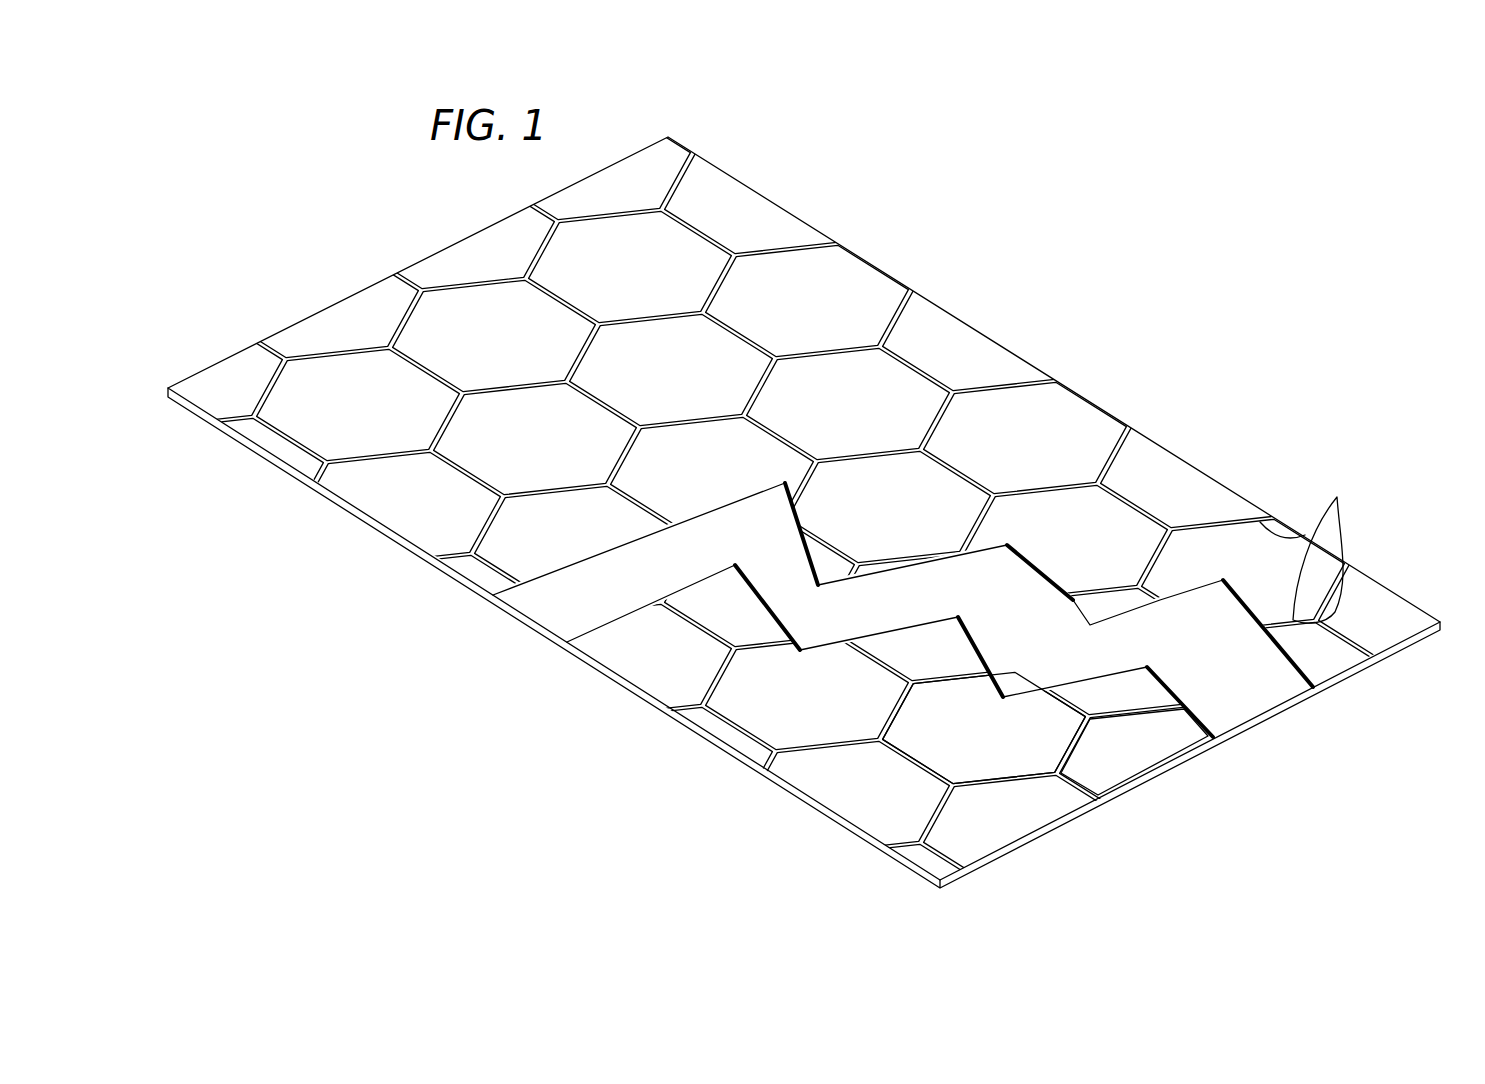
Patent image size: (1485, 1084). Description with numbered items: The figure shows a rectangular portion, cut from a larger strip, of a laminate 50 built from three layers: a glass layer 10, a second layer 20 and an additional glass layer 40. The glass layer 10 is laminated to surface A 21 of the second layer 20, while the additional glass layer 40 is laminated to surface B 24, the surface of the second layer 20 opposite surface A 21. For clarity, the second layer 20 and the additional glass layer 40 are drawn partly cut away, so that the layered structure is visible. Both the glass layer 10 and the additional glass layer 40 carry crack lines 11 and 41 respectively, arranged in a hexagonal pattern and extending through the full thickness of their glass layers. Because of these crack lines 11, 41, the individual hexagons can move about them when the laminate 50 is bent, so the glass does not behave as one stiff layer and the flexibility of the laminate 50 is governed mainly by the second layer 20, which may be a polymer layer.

The glass layer 10 is at (1030, 808).
The crack lines 11 is at (1137, 715).
The second layer 20 is at (1310, 680).
The surface A 21 is at (1222, 742).
The surface B 24 is at (1315, 690).
The additional glass layer 40 is at (1378, 629).
The crack lines 41 is at (1337, 497).
The laminate 50 is at (432, 613).